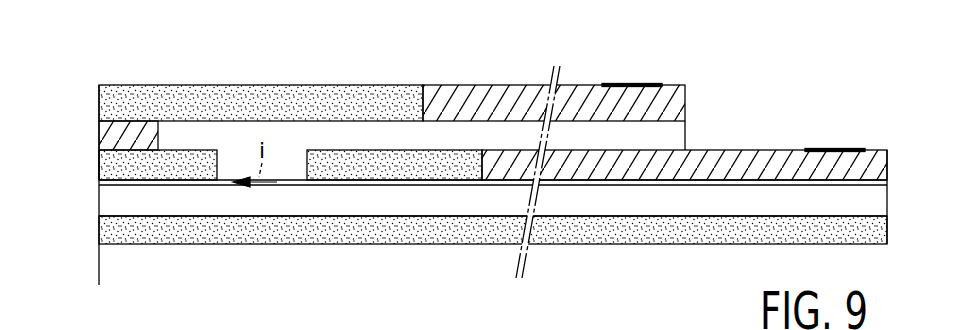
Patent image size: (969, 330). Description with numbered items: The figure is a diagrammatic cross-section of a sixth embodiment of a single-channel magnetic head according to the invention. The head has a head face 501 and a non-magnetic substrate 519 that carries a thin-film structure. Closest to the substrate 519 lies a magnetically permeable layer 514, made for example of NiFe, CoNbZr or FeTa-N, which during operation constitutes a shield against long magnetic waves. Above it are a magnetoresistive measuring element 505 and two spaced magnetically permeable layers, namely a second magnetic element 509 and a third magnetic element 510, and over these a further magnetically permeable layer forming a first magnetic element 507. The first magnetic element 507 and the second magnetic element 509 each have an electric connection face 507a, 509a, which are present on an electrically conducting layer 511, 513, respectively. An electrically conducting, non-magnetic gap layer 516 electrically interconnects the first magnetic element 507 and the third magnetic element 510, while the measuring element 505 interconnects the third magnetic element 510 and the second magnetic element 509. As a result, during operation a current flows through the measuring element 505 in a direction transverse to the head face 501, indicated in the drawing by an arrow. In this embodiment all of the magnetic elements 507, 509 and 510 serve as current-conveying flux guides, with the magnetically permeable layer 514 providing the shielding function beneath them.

The head face 501 is at (99, 160).
The magnetoresistive measuring element 505 is at (295, 187).
The first magnetic element 507 is at (290, 96).
The electric connection face 507a is at (627, 84).
The second magnetic element 509 is at (395, 172).
The electric connection face 509a is at (840, 149).
The third magnetic element 510 is at (181, 158).
The electrically conducting layer 511 is at (492, 100).
The electrically conducting layer 513 is at (752, 165).
The magnetically permeable layer 514 is at (468, 232).
The gap layer 516 is at (113, 138).
The non-magnetic substrate 519 is at (109, 261).